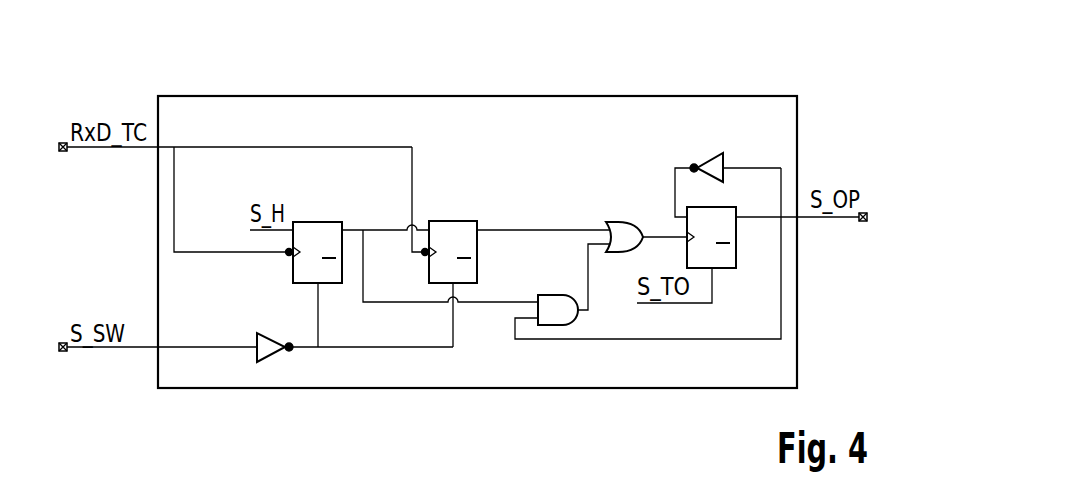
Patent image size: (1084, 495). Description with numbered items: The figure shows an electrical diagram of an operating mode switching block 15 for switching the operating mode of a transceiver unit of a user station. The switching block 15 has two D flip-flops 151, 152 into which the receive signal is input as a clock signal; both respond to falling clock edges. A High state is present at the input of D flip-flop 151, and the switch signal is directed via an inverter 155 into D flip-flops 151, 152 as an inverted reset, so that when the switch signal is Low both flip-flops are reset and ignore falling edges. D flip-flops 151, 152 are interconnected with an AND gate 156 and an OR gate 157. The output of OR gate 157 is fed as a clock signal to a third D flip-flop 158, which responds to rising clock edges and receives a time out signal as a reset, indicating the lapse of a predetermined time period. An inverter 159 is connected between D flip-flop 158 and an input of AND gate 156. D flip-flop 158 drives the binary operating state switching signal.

The switching block 15 is at (729, 96).
The D flip-flop 151 is at (328, 222).
The D flip-flop 152 is at (458, 221).
The inverter 155 is at (270, 333).
The AND gate 156 is at (552, 295).
The OR gate 157 is at (610, 222).
The D flip-flop 158 is at (728, 268).
The inverter 159 is at (712, 158).